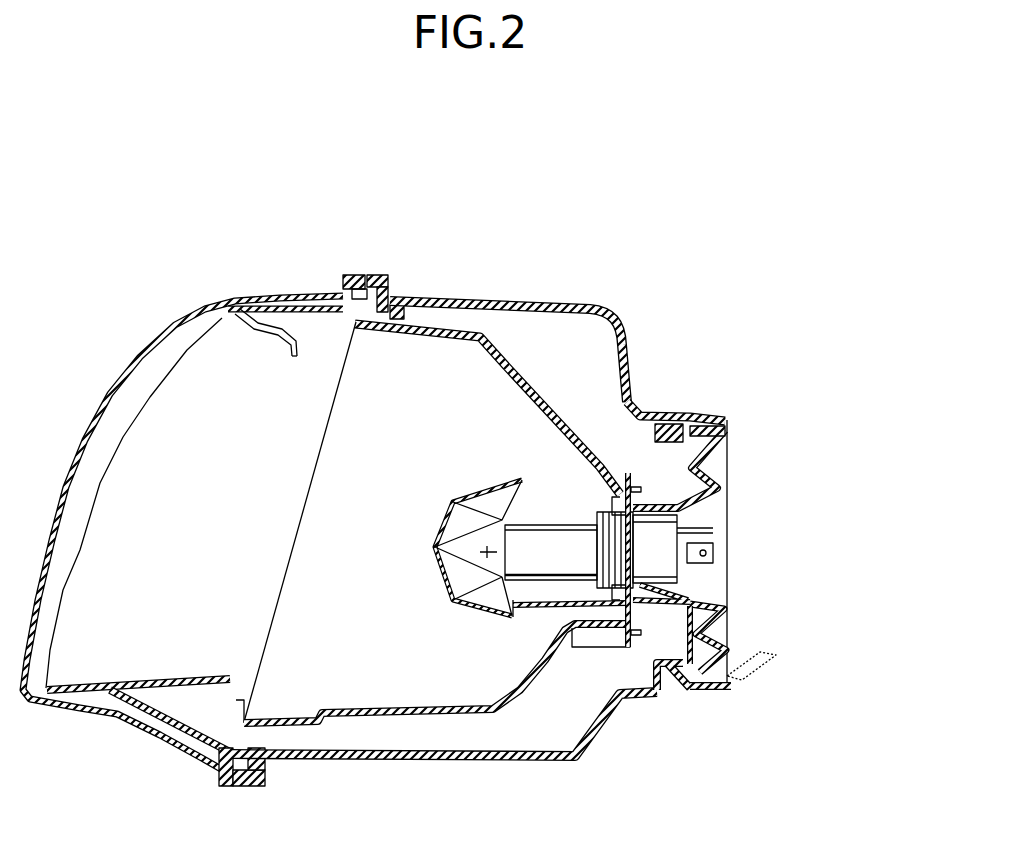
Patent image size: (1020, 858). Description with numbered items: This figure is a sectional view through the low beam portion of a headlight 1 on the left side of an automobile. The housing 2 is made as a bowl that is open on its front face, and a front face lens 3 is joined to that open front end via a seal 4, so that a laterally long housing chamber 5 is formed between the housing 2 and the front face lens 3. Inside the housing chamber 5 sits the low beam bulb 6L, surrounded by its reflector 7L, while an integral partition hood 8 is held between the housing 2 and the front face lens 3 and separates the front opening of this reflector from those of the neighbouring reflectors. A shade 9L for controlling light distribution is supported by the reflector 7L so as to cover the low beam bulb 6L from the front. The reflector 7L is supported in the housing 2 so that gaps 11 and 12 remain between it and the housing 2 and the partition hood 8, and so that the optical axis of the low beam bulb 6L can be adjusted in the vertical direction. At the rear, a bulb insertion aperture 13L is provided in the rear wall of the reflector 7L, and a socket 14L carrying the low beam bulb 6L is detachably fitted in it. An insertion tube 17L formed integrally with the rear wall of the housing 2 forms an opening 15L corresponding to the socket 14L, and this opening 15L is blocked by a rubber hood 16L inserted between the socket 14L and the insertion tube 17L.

The headlight 1 is at (537, 292).
The housing 2 is at (507, 300).
The front face lens 3 is at (160, 330).
The seal 4 is at (362, 275).
The housing chamber 5 is at (562, 378).
The partition hood 8 is at (276, 298).
The gap 11 is at (404, 320).
The gap 12 is at (360, 315).
The low beam bulb 6L is at (446, 565).
The reflector 7L is at (383, 327).
The shade 9L is at (436, 548).
The bulb insertion aperture 13L is at (643, 492).
The socket 14L is at (663, 550).
The opening 15L is at (712, 637).
The rubber hood 16L is at (716, 608).
The insertion tube 17L is at (677, 427).